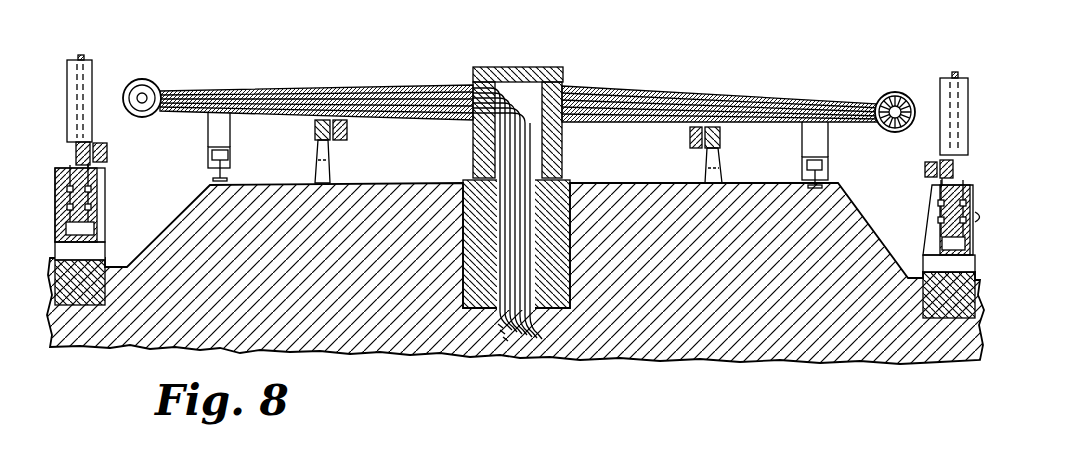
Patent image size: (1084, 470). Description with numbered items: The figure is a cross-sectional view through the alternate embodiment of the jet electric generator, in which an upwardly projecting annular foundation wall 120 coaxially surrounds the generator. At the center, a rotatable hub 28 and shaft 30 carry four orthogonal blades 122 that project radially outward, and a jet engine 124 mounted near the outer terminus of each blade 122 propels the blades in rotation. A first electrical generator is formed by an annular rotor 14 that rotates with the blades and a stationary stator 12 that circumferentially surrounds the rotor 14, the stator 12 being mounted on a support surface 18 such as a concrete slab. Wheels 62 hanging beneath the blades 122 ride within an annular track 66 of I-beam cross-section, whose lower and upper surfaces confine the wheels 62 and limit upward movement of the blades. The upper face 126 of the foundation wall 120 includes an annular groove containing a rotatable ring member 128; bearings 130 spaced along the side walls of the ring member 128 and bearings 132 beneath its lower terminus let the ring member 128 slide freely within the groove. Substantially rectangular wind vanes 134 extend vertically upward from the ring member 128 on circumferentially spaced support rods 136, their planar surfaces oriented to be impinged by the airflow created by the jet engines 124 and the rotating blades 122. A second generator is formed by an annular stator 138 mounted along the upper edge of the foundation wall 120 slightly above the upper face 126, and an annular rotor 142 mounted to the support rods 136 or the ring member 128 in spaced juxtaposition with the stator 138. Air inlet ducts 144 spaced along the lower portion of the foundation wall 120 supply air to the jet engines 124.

The stator 12 is at (315, 129).
The rotor 14 is at (348, 133).
The support surface 18 is at (400, 183).
The rotatable hub 28 is at (562, 157).
The shaft 30 is at (540, 67).
The wheels 62 is at (229, 168).
The annular track 66 is at (222, 180).
The foundation wall 120 is at (104, 200).
The blades 122 is at (276, 90).
The jet engine 124 is at (158, 86).
The upper face 126 is at (106, 165).
The ring member 128 is at (104, 188).
The bearings 130 is at (103, 175).
The bearings 132 is at (106, 221).
The wind vanes 134 is at (545, 0).
The support rods 136 is at (82, 58).
The annular stator 138 is at (108, 152).
The annular rotor 142 is at (102, 143).
The air inlet ducts 144 is at (95, 249).